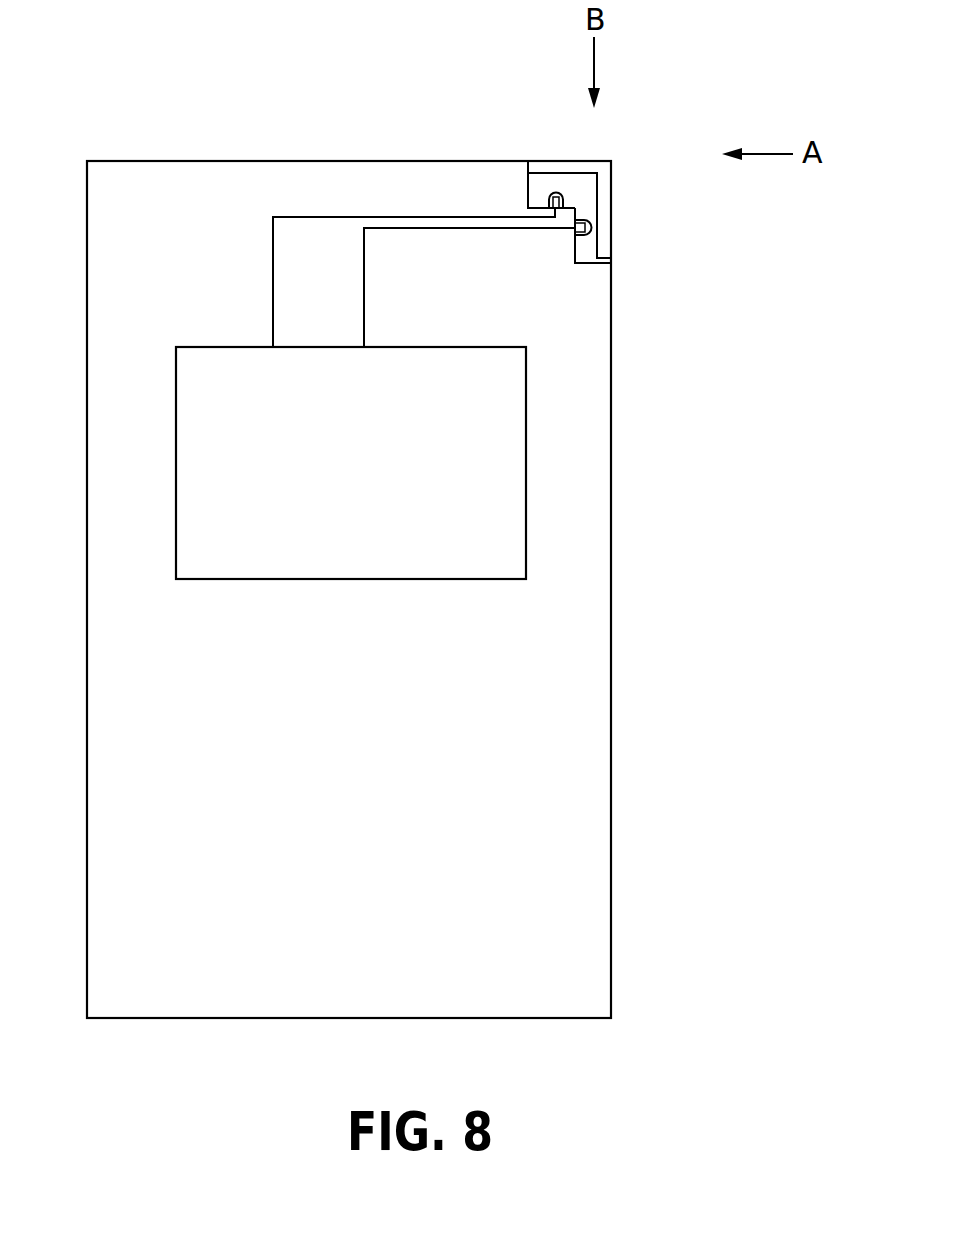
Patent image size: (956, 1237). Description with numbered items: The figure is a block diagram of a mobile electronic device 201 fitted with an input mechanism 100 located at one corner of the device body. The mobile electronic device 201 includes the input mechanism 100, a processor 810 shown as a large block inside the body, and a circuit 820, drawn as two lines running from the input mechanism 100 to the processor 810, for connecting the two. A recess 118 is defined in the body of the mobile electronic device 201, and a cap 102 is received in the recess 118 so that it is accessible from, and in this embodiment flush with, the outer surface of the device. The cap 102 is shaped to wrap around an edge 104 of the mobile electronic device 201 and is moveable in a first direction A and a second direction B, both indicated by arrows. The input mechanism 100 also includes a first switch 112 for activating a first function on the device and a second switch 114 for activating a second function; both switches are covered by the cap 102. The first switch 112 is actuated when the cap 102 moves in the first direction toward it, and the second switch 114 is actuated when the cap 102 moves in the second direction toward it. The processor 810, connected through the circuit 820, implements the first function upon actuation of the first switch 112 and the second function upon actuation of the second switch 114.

The input mechanism 100 is at (567, 180).
The cap 102 is at (612, 189).
The edge 104 is at (524, 168).
The first switch 112 is at (592, 228).
The second switch 114 is at (556, 192).
The recess 118 is at (575, 245).
The mobile electronic device 201 is at (370, 970).
The processor 810 is at (377, 551).
The circuit 820 is at (364, 283).